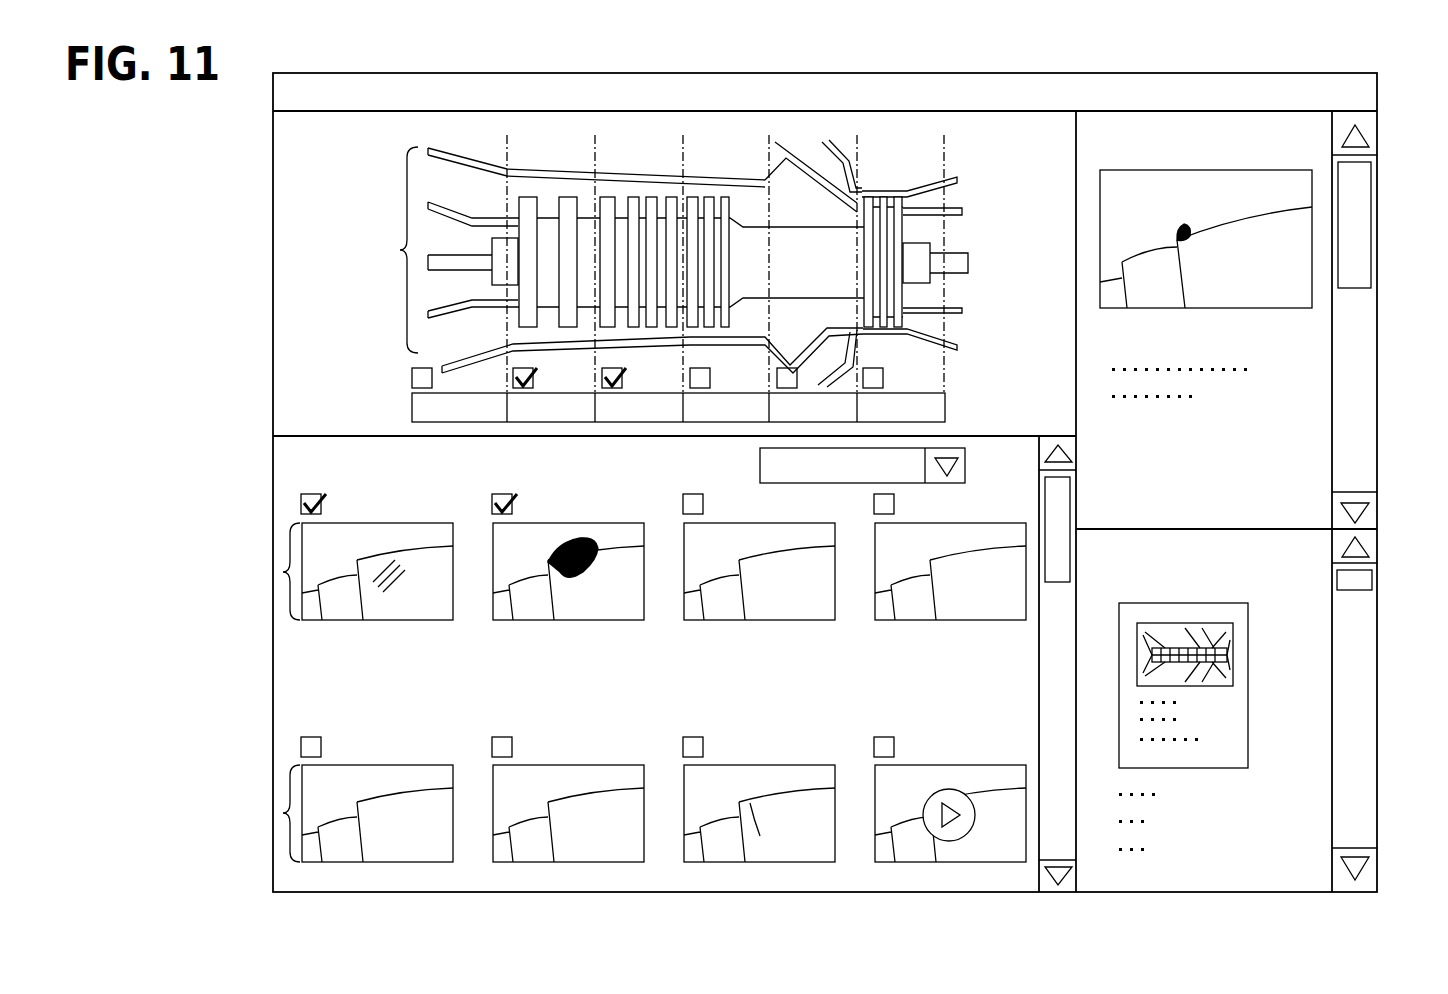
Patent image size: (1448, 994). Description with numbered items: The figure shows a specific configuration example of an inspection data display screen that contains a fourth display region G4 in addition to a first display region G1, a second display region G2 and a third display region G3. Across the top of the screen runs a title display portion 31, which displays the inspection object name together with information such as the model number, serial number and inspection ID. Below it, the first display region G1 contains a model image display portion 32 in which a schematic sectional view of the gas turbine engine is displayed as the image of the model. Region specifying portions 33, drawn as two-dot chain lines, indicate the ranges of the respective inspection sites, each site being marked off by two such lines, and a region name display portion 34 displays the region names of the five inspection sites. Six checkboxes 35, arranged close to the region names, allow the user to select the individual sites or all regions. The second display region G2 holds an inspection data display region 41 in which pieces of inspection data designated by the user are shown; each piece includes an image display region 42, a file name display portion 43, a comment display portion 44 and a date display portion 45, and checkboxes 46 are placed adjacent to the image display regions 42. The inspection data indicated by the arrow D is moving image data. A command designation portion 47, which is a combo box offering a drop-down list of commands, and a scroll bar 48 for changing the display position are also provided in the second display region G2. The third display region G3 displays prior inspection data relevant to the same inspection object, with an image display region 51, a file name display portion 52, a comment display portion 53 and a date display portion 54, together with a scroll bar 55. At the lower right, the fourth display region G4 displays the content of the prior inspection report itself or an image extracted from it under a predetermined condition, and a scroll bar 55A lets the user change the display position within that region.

The title display portion 31 is at (836, 89).
The model image display portion 32 is at (663, 263).
The region specifying portions 33 is at (593, 150).
The region name display portion 34 is at (408, 408).
The checkboxes 35 is at (410, 378).
The inspection data display region 41 is at (286, 471).
The image display region 42 is at (281, 573).
The file name display portion 43 is at (305, 638).
The comment display portion 44 is at (305, 668).
The date display portion 45 is at (305, 702).
The checkboxes 46 is at (291, 502).
The command designation portion 47 is at (849, 491).
The scroll bar 48 is at (1043, 847).
The image display region 51 is at (1324, 298).
The file name display portion 52 is at (1260, 337).
The comment display portion 53 is at (1264, 382).
The date display portion 54 is at (1264, 430).
The scroll bar 55 is at (1359, 263).
The scroll bar 55A is at (1359, 630).
The arrow D is at (886, 864).
The first display region G1 is at (298, 229).
The second display region G2 is at (282, 449).
The third display region G3 is at (1263, 132).
The fourth display region G4 is at (1217, 860).